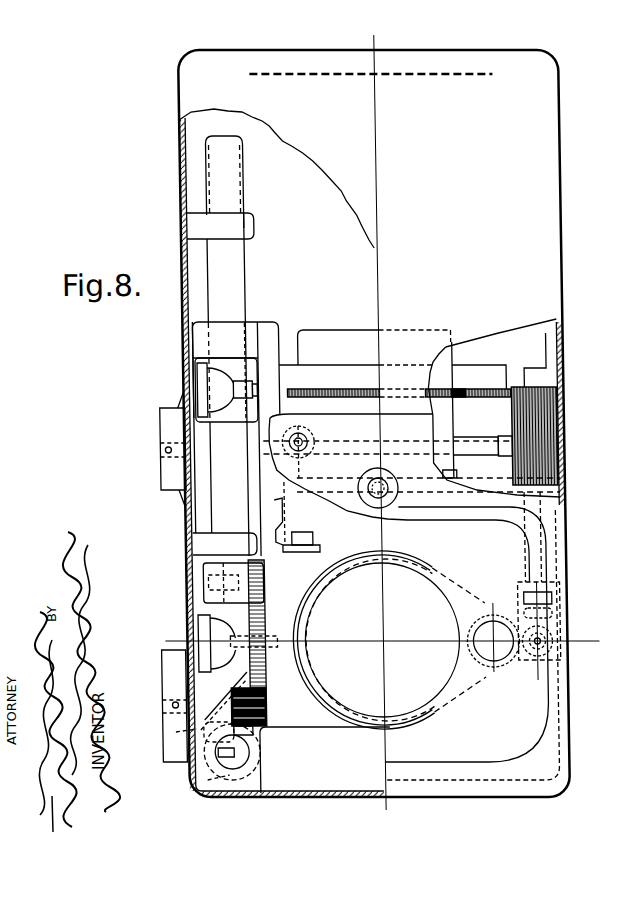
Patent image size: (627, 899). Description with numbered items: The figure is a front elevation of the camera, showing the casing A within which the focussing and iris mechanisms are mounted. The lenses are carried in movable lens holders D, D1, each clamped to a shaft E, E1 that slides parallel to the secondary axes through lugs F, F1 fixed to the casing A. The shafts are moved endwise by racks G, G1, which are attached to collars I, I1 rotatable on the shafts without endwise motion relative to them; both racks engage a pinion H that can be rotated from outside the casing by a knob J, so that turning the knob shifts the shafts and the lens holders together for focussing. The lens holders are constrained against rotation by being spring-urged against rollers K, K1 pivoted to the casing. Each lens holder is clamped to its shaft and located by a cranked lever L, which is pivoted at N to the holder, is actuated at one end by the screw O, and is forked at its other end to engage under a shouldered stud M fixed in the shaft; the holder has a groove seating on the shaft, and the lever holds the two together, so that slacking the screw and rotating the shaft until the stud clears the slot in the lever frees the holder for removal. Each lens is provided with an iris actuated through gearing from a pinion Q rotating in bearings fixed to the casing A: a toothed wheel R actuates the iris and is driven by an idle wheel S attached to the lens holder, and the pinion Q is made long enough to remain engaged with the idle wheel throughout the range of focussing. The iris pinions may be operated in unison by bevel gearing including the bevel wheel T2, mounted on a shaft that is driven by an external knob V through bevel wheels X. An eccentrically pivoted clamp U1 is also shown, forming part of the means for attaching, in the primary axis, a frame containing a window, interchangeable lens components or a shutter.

The casing A is at (549, 217).
The lens holder D is at (263, 333).
The lens holder D1 is at (301, 725).
The shaft E is at (234, 196).
The shaft E1 is at (211, 762).
The lug F is at (250, 232).
The lug F1 is at (178, 555).
The rack G is at (255, 626).
The rack G1 is at (245, 735).
The pinion H is at (258, 703).
The collar I is at (196, 596).
The collar I1 is at (218, 772).
The knob J is at (165, 736).
The roller K is at (307, 439).
The roller K1 is at (287, 553).
The cranked lever L is at (237, 675).
The shouldered stud M is at (165, 732).
The pivot N is at (257, 728).
The screw O is at (183, 375).
The pinion Q is at (552, 418).
The toothed wheel R is at (307, 390).
The idle wheel S is at (486, 388).
The bevel wheel T2 is at (524, 660).
The eccentrically pivoted clamp U1 is at (388, 502).
The external knob V is at (168, 467).
The bevel wheels X is at (493, 456).